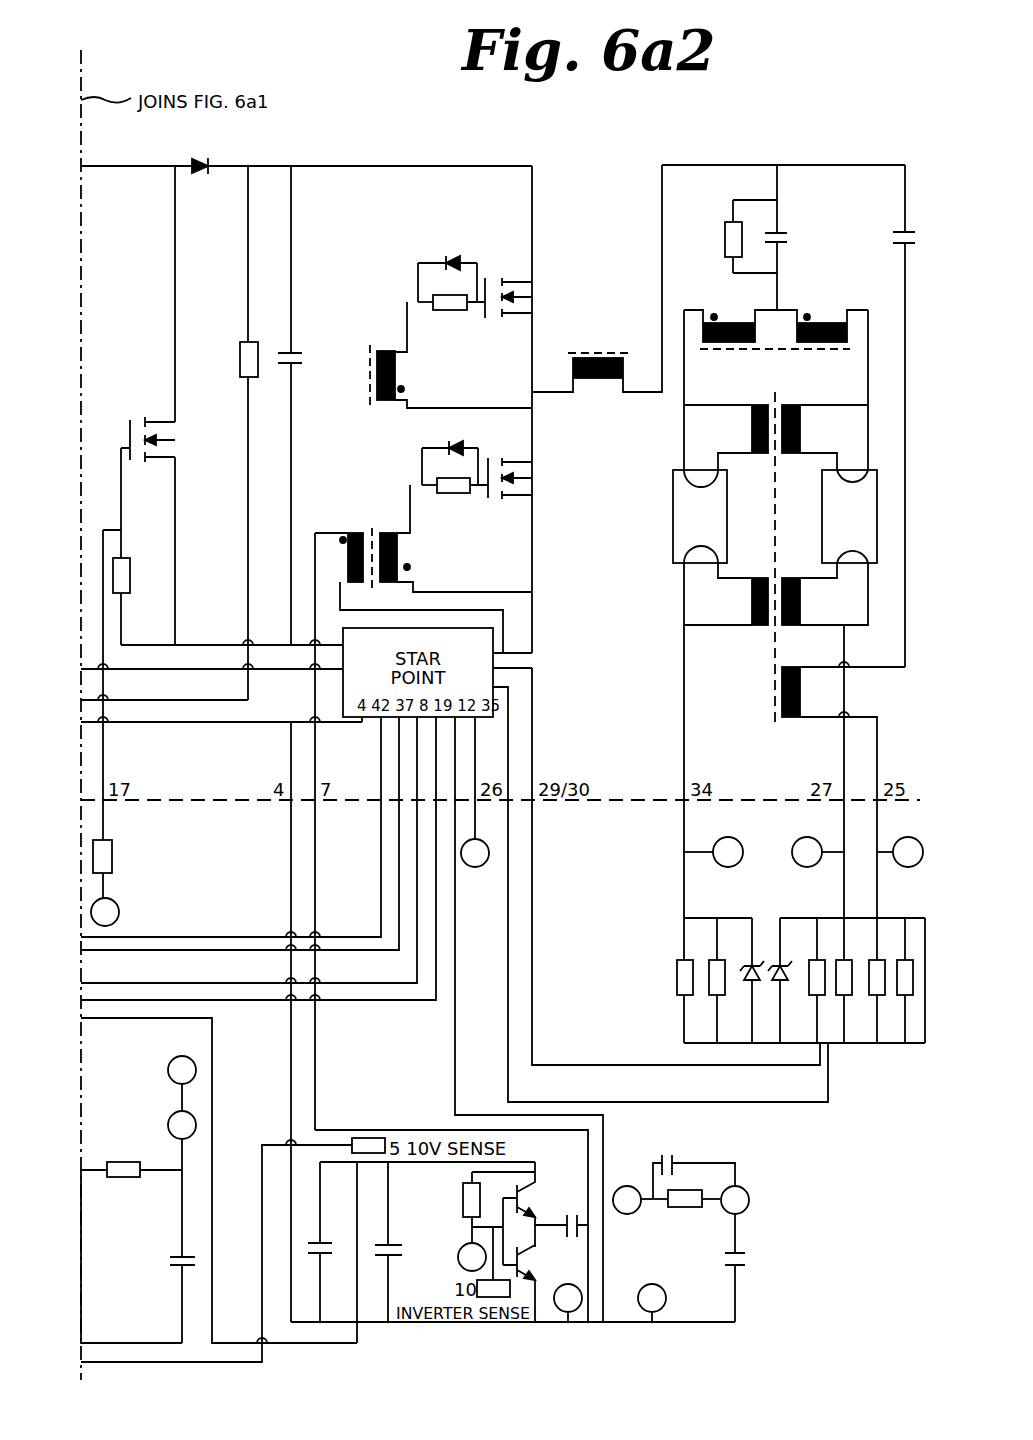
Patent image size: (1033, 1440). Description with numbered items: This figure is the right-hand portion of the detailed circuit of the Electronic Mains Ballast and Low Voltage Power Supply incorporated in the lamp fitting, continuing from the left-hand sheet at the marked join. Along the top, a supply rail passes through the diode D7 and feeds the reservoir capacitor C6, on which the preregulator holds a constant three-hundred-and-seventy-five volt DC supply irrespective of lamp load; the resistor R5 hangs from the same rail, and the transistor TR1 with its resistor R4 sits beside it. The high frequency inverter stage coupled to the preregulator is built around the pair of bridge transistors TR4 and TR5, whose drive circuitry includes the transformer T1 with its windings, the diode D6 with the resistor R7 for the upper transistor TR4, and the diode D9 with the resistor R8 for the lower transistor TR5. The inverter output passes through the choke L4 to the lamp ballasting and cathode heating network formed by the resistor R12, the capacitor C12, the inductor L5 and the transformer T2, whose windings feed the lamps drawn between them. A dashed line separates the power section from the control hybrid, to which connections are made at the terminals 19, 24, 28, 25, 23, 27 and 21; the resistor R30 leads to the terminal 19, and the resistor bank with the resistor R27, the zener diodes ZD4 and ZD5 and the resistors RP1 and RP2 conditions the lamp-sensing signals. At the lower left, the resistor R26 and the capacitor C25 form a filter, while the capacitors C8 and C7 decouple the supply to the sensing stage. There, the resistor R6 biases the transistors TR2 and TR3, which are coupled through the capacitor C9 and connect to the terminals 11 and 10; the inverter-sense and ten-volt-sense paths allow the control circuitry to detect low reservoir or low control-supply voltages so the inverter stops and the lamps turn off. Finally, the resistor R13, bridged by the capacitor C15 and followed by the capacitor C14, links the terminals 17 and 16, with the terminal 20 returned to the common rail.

The diode D7 is at (198, 154).
The resistor R5 is at (234, 433).
The reservoir capacitor C6 is at (306, 405).
The transistor TR1 is at (168, 405).
The resistor R4 is at (131, 546).
The transformer T1 is at (423, 477).
The diode D6 is at (447, 267).
The resistor R7 is at (442, 315).
The bridge transistor TR4 is at (521, 298).
The inductor L4 is at (597, 287).
The diode D9 is at (450, 452).
The resistor R8 is at (446, 499).
The bridge transistor TR5 is at (522, 478).
The resistor R12 is at (728, 237).
The capacitor C12 is at (796, 239).
The inductor L5 is at (776, 380).
The transformer T2 is at (789, 717).
The resistor R30 is at (123, 869).
The terminal 19 is at (105, 912).
The terminal 24 is at (475, 853).
The terminal 28 is at (713, 852).
The terminal 25 is at (818, 852).
The terminal 23 is at (900, 852).
The resistor R27 is at (667, 964).
The zener diode ZD4 is at (743, 958).
The zener diode ZD5 is at (790, 958).
The resistor RP1 is at (728, 990).
The resistor RP2 is at (804, 990).
The terminal 27 is at (182, 1083).
The terminal 21 is at (182, 1125).
The resistor R26 is at (131, 1240).
The capacitor C25 is at (156, 1241).
The capacitor C8 is at (327, 1237).
The capacitor C7/C23 C7 is at (413, 1239).
The resistor R6 is at (481, 1226).
The terminal 11 is at (472, 1257).
The transistor TR2 is at (539, 1213).
The transistor TR3 is at (539, 1283).
The capacitor C9 is at (561, 1237).
The terminal 10 is at (568, 1303).
The terminal 17 is at (640, 1200).
The resistor R13 is at (692, 1211).
The terminal 16 is at (735, 1200).
The capacitor C15 is at (692, 1163).
The capacitor C14 is at (714, 1268).
The terminal 20 is at (652, 1303).